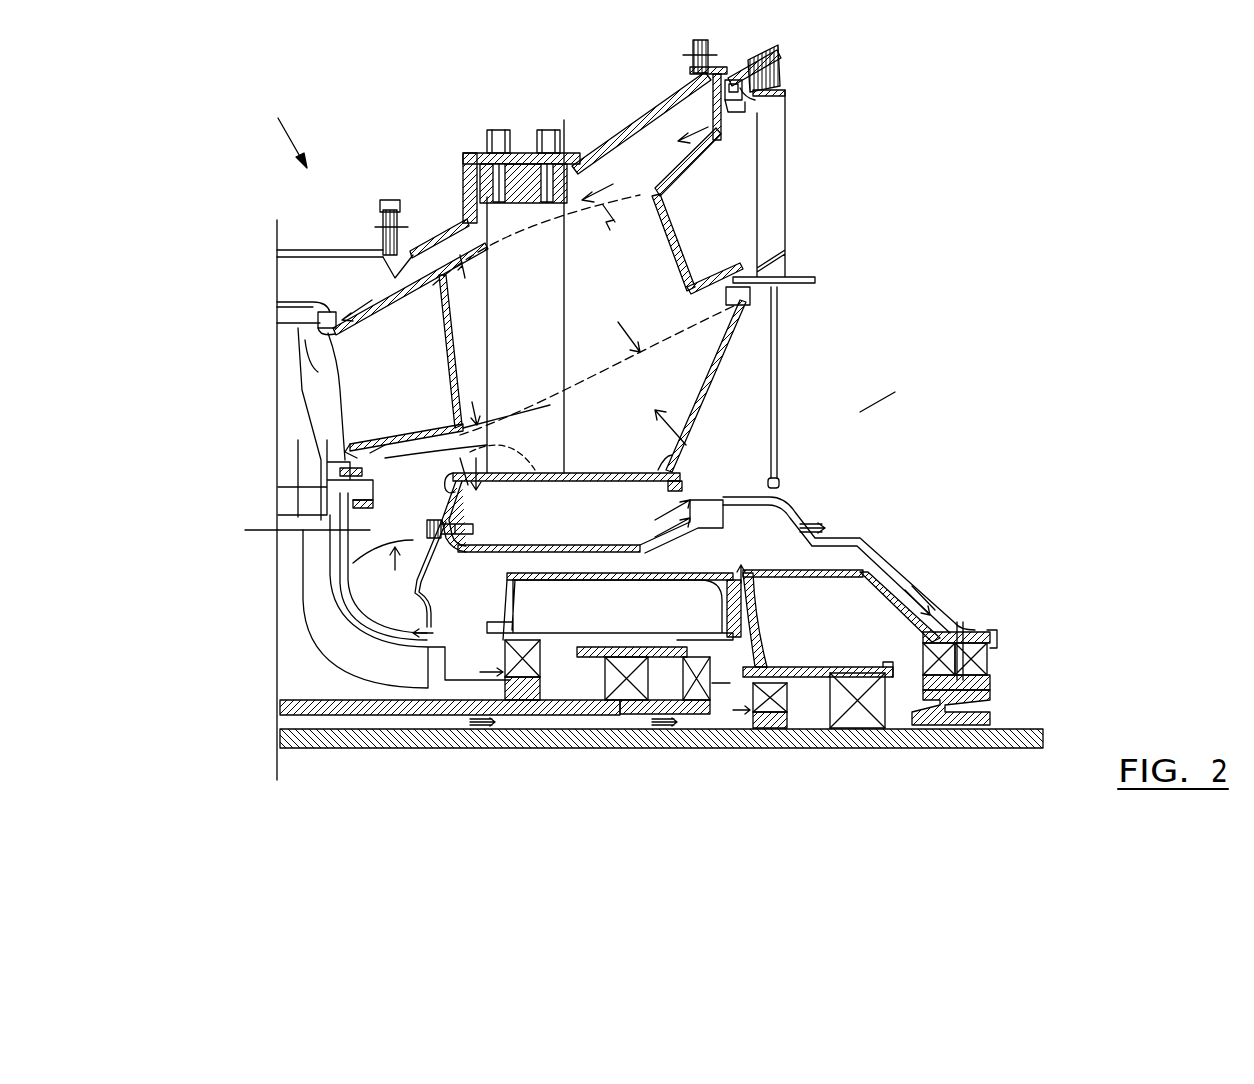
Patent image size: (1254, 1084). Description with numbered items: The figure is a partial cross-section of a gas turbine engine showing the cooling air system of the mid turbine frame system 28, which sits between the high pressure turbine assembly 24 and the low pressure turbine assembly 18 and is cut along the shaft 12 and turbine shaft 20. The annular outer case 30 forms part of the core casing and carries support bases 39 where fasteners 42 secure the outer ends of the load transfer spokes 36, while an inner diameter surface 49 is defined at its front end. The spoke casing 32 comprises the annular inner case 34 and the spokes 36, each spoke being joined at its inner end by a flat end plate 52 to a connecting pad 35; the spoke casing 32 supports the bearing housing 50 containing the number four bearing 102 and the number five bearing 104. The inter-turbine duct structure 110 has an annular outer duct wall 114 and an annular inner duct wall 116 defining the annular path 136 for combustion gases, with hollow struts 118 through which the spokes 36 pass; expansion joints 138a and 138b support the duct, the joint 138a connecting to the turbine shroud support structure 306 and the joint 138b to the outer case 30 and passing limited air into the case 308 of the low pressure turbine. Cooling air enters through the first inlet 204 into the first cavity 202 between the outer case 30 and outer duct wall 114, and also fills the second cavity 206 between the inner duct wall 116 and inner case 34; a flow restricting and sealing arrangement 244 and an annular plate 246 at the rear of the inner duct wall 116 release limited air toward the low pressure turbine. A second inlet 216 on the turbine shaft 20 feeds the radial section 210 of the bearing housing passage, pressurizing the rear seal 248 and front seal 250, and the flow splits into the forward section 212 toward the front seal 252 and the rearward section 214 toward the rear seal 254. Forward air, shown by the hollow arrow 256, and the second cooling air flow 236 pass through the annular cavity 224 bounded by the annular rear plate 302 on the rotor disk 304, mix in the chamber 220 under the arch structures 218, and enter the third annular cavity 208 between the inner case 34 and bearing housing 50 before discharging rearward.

The shaft 12 is at (880, 715).
The low pressure turbine assembly 18 is at (790, 207).
The turbine shaft 20 is at (590, 715).
The high pressure turbine assembly 24 is at (300, 607).
The mid turbine frame system 28 is at (283, 122).
The annular outer case 30 is at (448, 195).
The spoke casing 32 is at (892, 392).
The annular inner case 34 is at (673, 450).
The connecting pad 35 is at (580, 484).
The load transfer spokes 36 is at (568, 415).
The support bases 39 is at (470, 150).
The fasteners 42 is at (572, 132).
The inner diameter surface 49 is at (390, 258).
The bearing housing 50 is at (930, 588).
The flat end plate 52 is at (583, 465).
The #4 bearing 102 is at (633, 690).
The #5 bearing 104 is at (895, 748).
The inter-turbine duct structure 110 is at (740, 350).
The annular outer duct wall 114 is at (403, 290).
The annular inner duct wall 116 is at (395, 432).
The hollow struts 118 is at (683, 227).
The annular path 136 is at (425, 347).
The expansion joint 138a is at (312, 356).
The expansion joint 138b is at (736, 112).
The first cavity 202 is at (660, 173).
The first inlet 204 is at (645, 120).
The second cavity 206 is at (677, 393).
The third annular cavity 208 is at (533, 536).
The radial section 210 is at (745, 648).
The forward section 212 is at (610, 545).
The rearward section 214 is at (865, 553).
The second inlet 216 is at (720, 712).
The arch structures 218 is at (445, 430).
The chamber 220 is at (443, 484).
The annular cavity 224 is at (367, 560).
The second cooling air flow 236 is at (355, 497).
The flow restricting and sealing arrangement 244 is at (740, 302).
The annular plate 246 is at (705, 395).
The rear seal 248 is at (705, 690).
The front seal 250 is at (780, 698).
The front seal 252 is at (540, 657).
The rear seal 254 is at (990, 652).
The hollow arrow 256 is at (335, 532).
The annular rear plate 302 is at (330, 582).
The rotor disk 304 is at (310, 667).
The turbine shroud support structure 306 is at (300, 292).
The case 308 is at (737, 70).